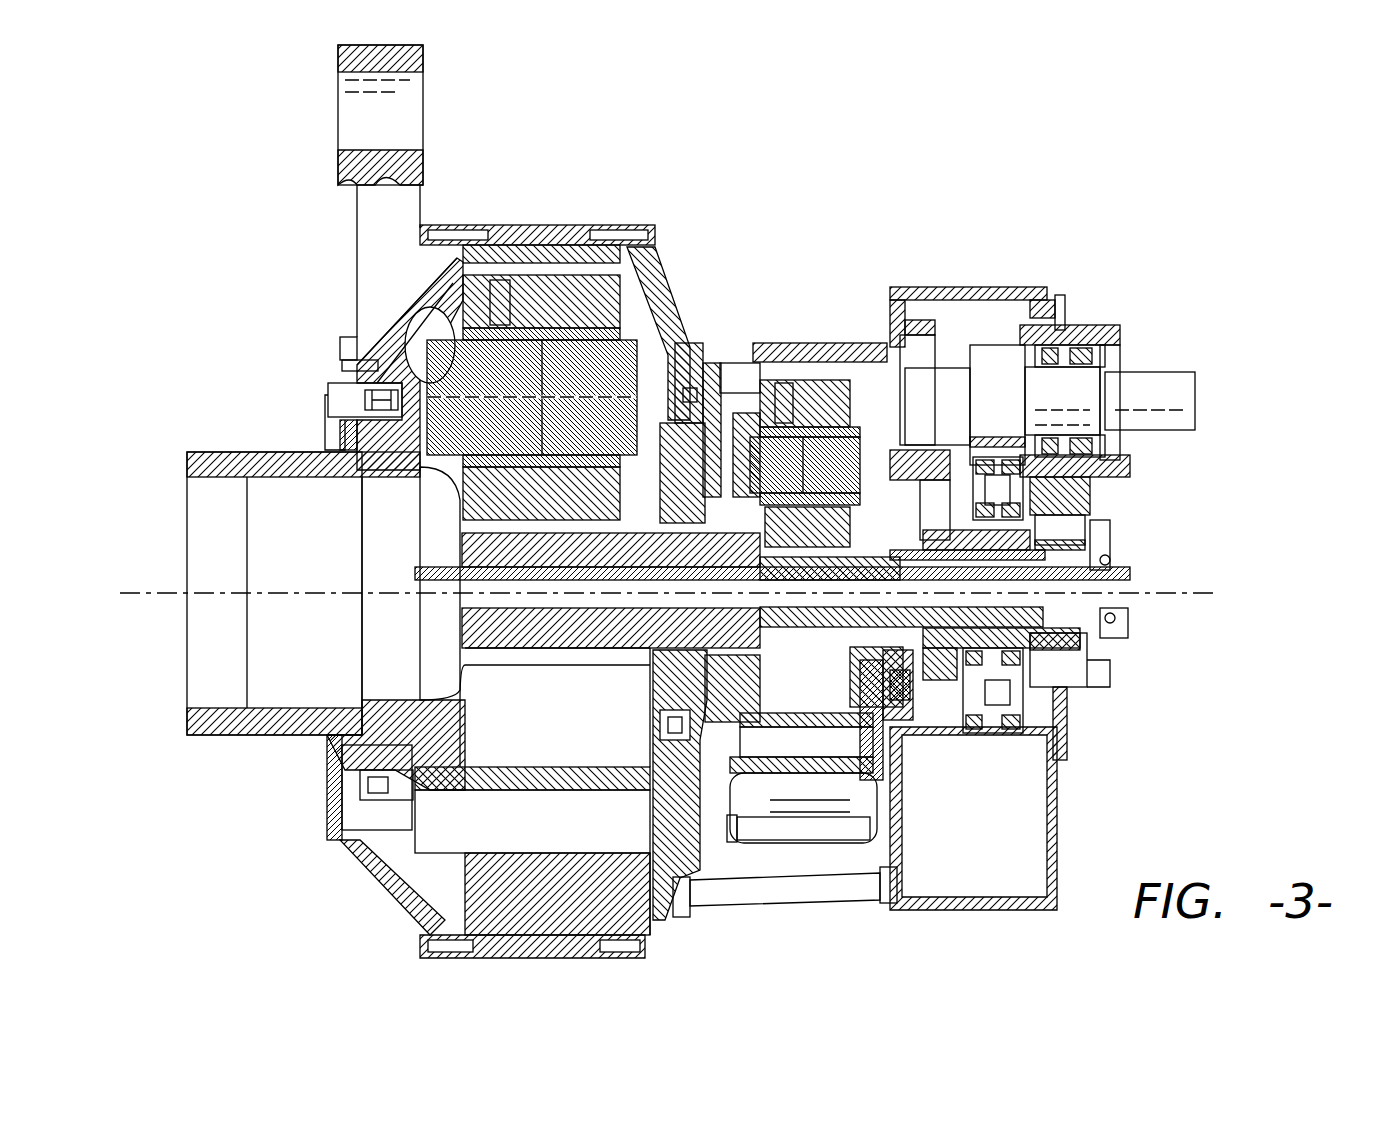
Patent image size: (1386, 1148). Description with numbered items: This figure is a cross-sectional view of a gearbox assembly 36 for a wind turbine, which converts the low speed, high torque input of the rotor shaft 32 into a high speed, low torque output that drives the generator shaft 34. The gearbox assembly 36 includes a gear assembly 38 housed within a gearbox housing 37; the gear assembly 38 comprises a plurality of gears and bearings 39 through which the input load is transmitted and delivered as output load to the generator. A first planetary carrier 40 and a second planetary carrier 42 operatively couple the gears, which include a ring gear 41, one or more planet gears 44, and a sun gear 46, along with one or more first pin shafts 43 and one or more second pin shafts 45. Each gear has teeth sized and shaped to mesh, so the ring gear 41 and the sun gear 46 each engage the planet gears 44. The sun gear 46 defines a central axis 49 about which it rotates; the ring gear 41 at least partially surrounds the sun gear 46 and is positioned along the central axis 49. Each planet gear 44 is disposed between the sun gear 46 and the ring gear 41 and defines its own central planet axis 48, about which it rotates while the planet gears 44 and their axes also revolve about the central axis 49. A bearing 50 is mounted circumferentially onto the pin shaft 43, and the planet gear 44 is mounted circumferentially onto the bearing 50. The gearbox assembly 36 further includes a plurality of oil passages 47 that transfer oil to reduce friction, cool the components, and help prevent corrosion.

The rotor shaft 32 is at (187, 540).
The generator shaft 34 is at (1168, 372).
The gearbox assembly 36 is at (1145, 250).
The gearbox housing 37 is at (1000, 290).
The gear assembly 38 is at (440, 265).
The bearings 39 is at (672, 320).
The first planetary carrier 40 is at (240, 450).
The ring gear 41 is at (580, 275).
The second planetary carrier 42 is at (722, 430).
The first pin shaft 43 is at (440, 335).
The planet gear 44 is at (535, 300).
The second pin shaft 45 is at (825, 450).
The sun gear 46 is at (530, 630).
The oil passages 47 is at (690, 375).
The central planet axis 48 is at (285, 398).
The central axis 49 is at (150, 598).
The bearing 50 is at (500, 320).